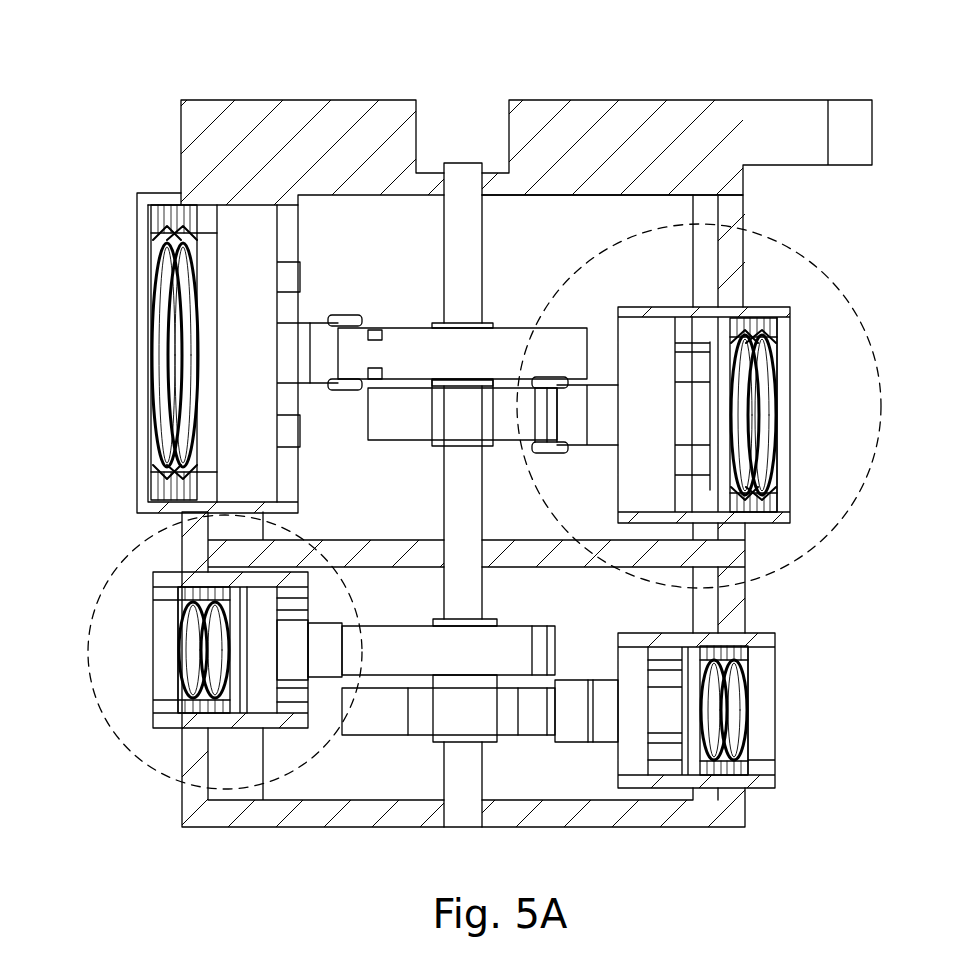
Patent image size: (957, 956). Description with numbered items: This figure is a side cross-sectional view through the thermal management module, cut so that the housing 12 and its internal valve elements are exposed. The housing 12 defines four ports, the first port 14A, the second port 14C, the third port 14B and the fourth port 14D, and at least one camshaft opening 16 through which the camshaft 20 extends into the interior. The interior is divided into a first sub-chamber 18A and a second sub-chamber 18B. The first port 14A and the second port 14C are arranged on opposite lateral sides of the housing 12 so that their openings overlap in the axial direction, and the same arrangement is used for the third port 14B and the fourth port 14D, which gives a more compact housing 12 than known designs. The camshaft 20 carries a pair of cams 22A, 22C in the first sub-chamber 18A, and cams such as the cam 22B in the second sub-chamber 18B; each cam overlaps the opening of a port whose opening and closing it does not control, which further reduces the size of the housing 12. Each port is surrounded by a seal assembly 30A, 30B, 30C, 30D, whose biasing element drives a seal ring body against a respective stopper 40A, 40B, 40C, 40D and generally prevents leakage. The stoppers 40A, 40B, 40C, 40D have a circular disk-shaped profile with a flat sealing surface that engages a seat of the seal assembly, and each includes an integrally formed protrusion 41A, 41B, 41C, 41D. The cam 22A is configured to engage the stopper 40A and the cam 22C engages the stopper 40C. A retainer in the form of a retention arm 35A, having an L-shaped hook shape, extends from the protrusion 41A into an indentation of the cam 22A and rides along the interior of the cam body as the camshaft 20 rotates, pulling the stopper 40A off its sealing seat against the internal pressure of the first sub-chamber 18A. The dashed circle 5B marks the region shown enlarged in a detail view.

The housing 12 is at (340, 117).
The camshaft opening 16 is at (483, 188).
The camshaft 20 is at (453, 190).
The first sub-chamber 18A is at (667, 272).
The second sub-chamber 18B is at (683, 607).
The first port 14A is at (137, 222).
The third port 14B is at (162, 717).
The second port 14C is at (777, 337).
The fourth port 14D is at (760, 760).
The seal assembly 30A is at (168, 210).
The seal assembly 30B is at (218, 713).
The seal assembly 30C is at (763, 523).
The seal assembly 30D is at (723, 777).
The stopper 40A is at (243, 327).
The stopper 40B is at (260, 670).
The stopper 40C is at (625, 455).
The stopper 40D is at (632, 737).
The protrusion 41A is at (315, 347).
The protrusion 41B is at (323, 663).
The protrusion 41C is at (575, 433).
The protrusion 41D is at (570, 712).
The cam 22A is at (567, 347).
The cam 22B is at (448, 680).
The cam 22C is at (390, 412).
The retention arm 35A is at (352, 320).
The detail region 5B is at (873, 351).